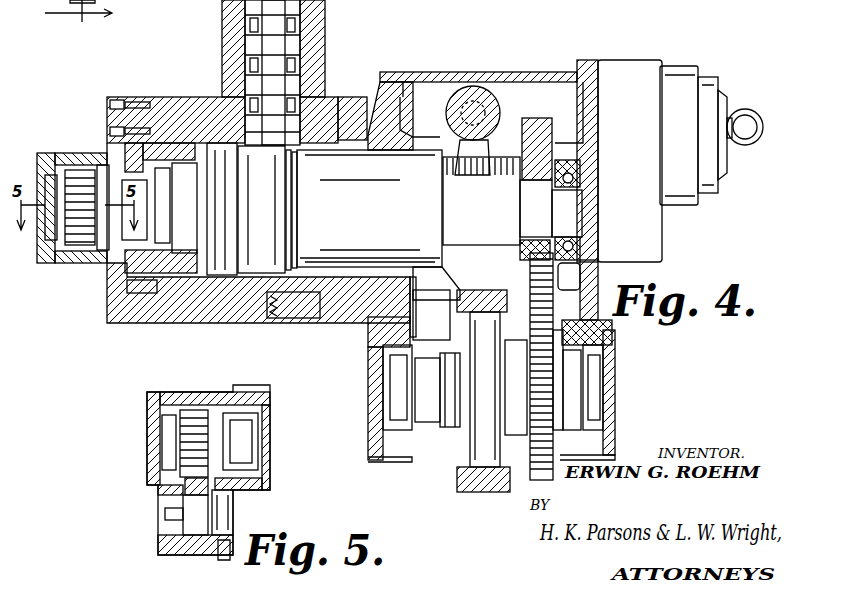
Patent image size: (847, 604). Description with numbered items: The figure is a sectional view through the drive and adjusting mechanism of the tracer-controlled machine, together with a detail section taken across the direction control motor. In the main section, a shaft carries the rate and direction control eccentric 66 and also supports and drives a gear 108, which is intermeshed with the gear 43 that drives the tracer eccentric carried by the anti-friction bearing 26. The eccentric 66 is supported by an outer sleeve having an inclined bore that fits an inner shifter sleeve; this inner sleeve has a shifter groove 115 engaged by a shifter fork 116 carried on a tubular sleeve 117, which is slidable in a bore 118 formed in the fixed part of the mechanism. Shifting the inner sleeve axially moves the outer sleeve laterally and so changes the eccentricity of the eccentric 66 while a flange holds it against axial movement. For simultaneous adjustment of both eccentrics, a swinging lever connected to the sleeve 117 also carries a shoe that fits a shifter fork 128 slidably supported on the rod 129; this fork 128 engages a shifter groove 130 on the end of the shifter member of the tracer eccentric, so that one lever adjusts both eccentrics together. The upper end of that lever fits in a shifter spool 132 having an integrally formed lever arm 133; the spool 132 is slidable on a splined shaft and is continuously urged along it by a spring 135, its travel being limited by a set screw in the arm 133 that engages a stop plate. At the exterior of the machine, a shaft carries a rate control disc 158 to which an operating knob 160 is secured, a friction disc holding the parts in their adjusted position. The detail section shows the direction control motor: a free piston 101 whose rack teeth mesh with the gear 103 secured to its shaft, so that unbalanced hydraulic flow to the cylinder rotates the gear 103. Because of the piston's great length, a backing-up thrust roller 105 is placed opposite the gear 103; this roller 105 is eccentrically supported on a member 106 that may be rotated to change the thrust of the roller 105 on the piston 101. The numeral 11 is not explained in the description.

In FIG. 4, the spindle axis direction 11 is at (60, 14).
In FIG. 4, the anti-friction bearing 26 is at (483, 465).
In FIG. 4, the gear 43 is at (545, 408).
In FIG. 4, the rate and direction control eccentric 66 is at (253, 268).
In FIG. 4, the gear 103 is at (78, 175).
In FIG. 5, the gear 103 is at (190, 413).
In FIG. 4, the shifter groove 115 is at (303, 237).
In FIG. 4, the shifter fork 116 is at (307, 185).
In FIG. 4, the tubular sleeve 117 is at (380, 157).
In FIG. 4, the shifter spool 132 is at (453, 155).
In FIG. 4, the spring 135 is at (512, 160).
In FIG. 4, the lever arm 133 is at (483, 157).
In FIG. 4, the gear 108 is at (542, 118).
In FIG. 4, the rate control disc 158 is at (728, 92).
In FIG. 4, the operating knob 160 is at (752, 146).
In FIG. 4, the bore 118 is at (347, 315).
In FIG. 4, the shifter fork 128 is at (432, 303).
In FIG. 4, the rod 129 is at (523, 293).
In FIG. 4, the shifter groove 130 is at (450, 418).
In FIG. 5, the free piston 101 is at (183, 487).
In FIG. 5, the thrust roller 105 is at (190, 520).
In FIG. 5, the member 106 is at (228, 512).